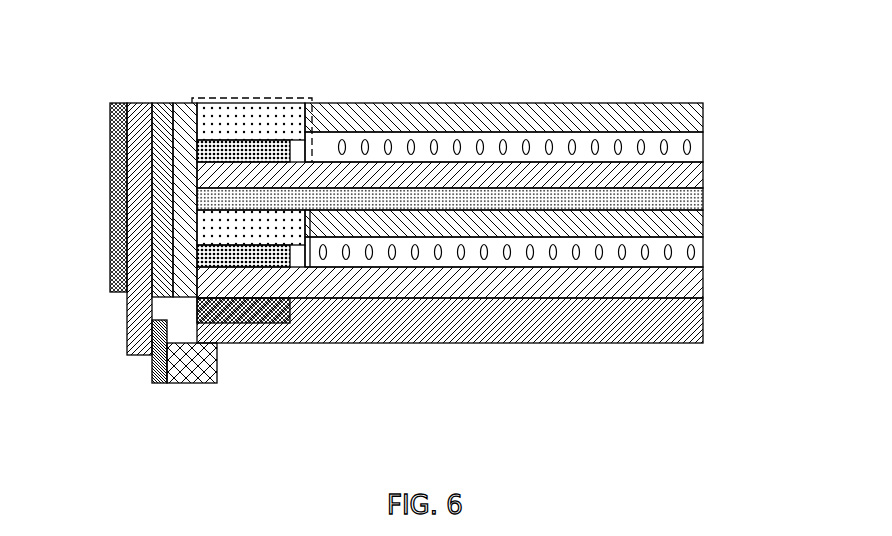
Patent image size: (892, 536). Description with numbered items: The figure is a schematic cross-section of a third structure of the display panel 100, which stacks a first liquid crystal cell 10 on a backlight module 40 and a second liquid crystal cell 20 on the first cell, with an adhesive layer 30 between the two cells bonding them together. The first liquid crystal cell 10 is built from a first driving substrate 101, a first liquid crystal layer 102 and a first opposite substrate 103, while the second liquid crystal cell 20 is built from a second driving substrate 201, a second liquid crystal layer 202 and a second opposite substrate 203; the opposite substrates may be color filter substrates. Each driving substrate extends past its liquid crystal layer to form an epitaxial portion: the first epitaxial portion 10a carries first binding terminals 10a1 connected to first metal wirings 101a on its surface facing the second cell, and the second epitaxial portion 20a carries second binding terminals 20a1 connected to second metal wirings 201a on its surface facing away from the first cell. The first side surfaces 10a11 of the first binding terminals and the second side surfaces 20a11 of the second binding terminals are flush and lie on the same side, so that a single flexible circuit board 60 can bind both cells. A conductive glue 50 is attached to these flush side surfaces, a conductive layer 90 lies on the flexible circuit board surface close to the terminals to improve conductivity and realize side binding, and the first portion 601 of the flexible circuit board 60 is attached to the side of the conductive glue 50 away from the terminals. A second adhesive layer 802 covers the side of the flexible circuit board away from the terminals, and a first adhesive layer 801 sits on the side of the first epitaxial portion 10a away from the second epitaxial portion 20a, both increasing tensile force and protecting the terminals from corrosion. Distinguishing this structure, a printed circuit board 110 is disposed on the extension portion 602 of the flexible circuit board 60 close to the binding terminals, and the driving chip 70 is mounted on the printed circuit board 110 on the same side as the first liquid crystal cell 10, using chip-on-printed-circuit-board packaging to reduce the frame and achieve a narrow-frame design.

The display panel 100 is at (674, 81).
The first liquid crystal cell 10 is at (514, 265).
The first driving substrate 101 is at (703, 285).
The first liquid crystal layer 102 is at (703, 253).
The first opposite substrate 103 is at (703, 222).
The first epitaxial portion 10a is at (313, 278).
The first binding terminals 10a1 is at (210, 262).
The first side surfaces 10a11 is at (197, 266).
The first metal wirings 101a is at (255, 258).
The second liquid crystal cell 20 is at (516, 148).
The second driving substrate 201 is at (703, 170).
The second liquid crystal layer 202 is at (703, 138).
The second opposite substrate 203 is at (703, 108).
The second epitaxial portion 20a is at (279, 99).
The second binding terminals 20a1 is at (198, 148).
The second side surfaces 20a11 is at (198, 160).
The second metal wirings 201a is at (257, 155).
The adhesive layer 30 is at (703, 197).
The backlight module 40 is at (703, 322).
The conductive glue 50 is at (152, 110).
The flexible circuit board 60 is at (105, 229).
The first portion 601 is at (110, 266).
The extension portion 602 is at (127, 318).
The driving chip 70 is at (193, 384).
The first adhesive layer 801 is at (283, 307).
The second adhesive layer 802 is at (110, 199).
The conductive layer 90 is at (176, 115).
The printed circuit board 110 is at (162, 384).